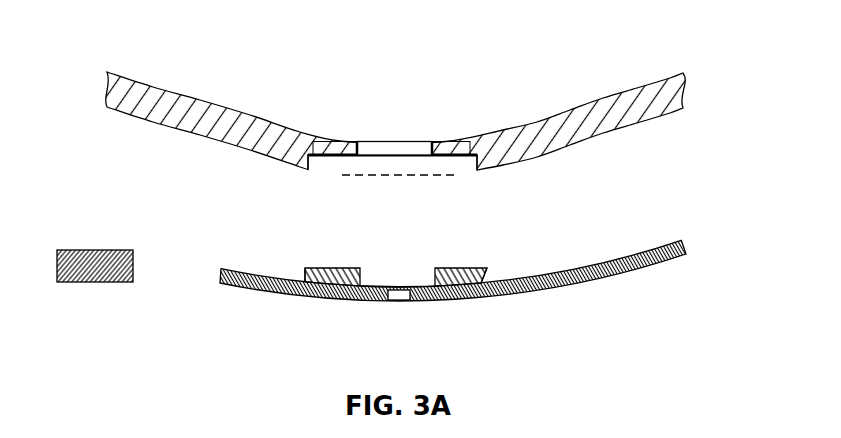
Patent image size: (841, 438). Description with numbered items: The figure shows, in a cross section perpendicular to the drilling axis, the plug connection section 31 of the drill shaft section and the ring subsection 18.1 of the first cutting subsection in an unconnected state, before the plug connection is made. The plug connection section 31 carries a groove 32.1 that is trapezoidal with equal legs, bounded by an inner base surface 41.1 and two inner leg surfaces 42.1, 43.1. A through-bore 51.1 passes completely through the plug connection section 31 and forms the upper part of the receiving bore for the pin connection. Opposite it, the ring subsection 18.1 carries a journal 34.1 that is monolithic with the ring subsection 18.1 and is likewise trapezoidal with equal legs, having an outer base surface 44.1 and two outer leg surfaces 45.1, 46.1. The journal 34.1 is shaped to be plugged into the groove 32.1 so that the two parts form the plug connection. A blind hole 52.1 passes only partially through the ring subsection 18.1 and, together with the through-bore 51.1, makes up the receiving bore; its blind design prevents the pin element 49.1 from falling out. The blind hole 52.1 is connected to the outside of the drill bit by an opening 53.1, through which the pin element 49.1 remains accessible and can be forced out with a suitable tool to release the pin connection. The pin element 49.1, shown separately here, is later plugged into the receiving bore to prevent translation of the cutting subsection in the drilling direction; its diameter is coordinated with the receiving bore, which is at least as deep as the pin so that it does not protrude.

The plug connection section 31 is at (640, 121).
The inner base surface 41.1 is at (338, 158).
The through-bore 51.1 is at (395, 140).
The inner leg surface 42.1 is at (309, 152).
The inner leg surface 43.1 is at (476, 152).
The groove 32.1 is at (435, 165).
The pin element 49.1 is at (98, 268).
The ring subsection 18.1 is at (603, 277).
The journal 34.1 is at (333, 284).
The outer base surface 44.1 is at (467, 263).
The opening 53.1 is at (396, 301).
The outer leg surface 45.1 is at (307, 283).
The outer leg surface 46.1 is at (483, 285).
The blind hole 52.1 is at (423, 279).